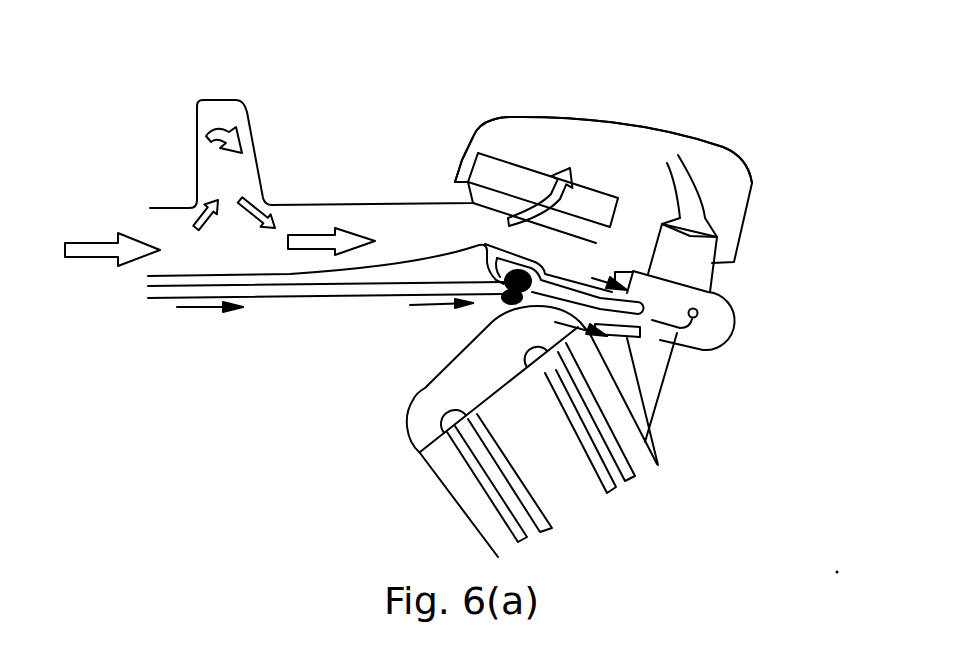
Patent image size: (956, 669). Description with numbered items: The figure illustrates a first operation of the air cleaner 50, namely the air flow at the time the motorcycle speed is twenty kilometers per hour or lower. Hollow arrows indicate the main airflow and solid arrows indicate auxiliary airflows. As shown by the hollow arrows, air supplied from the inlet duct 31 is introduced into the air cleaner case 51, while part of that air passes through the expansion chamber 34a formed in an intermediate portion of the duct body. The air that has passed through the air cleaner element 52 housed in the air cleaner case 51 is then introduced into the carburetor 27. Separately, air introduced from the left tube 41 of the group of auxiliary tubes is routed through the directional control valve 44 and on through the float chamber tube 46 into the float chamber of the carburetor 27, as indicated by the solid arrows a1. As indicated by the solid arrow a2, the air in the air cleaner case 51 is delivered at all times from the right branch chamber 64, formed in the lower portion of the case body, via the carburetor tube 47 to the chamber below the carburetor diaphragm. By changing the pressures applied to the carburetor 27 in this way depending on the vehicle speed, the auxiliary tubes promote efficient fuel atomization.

The carburetor 27 is at (752, 308).
The left inlet duct 31 is at (322, 153).
The expansion chamber 34a is at (210, 110).
The left tube 41 is at (295, 298).
The directional control valve 44 is at (478, 326).
The float chamber tube 46 is at (642, 336).
The carburetor tube 47 is at (635, 283).
The air cleaner 50 is at (743, 130).
The air cleaner case 51 is at (577, 119).
The air cleaner element 52 is at (519, 165).
The right branch chamber 64 is at (564, 236).
The auxiliary airflow a1 is at (207, 308).
The auxiliary airflow a2 is at (591, 276).